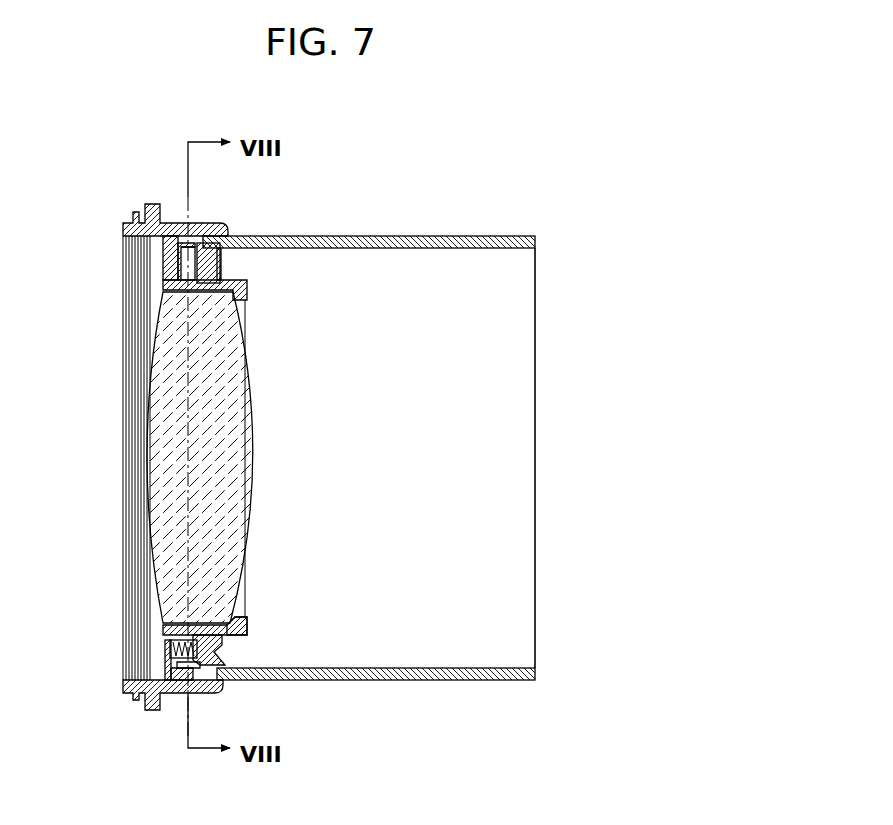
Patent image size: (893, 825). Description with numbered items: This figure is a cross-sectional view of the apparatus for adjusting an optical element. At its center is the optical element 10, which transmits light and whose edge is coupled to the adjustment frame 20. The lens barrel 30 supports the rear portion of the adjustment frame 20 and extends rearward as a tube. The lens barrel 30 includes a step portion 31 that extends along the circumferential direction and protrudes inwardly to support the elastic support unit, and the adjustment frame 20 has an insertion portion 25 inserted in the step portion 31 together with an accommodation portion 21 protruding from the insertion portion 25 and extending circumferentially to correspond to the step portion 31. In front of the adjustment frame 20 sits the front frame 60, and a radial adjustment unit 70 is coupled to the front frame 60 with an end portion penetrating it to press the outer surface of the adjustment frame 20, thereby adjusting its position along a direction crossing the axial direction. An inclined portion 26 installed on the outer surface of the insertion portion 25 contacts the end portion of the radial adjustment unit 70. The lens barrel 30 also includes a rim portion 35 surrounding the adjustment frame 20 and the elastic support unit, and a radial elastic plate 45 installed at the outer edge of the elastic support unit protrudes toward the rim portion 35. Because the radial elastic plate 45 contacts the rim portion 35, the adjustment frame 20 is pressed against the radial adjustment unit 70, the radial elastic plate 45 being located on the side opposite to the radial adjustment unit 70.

The optical element 10 is at (253, 420).
The adjustment frame 20 is at (242, 276).
The accommodation portion 21 is at (205, 243).
The insertion portion 25 is at (237, 627).
The inclined portion 26 is at (228, 652).
The lens barrel 30 is at (434, 233).
The step portion 31 is at (214, 264).
The rim portion 35 is at (185, 670).
The radial elastic plate 45 is at (181, 243).
The front frame 60 is at (120, 693).
The radial adjustment unit 70 is at (170, 666).